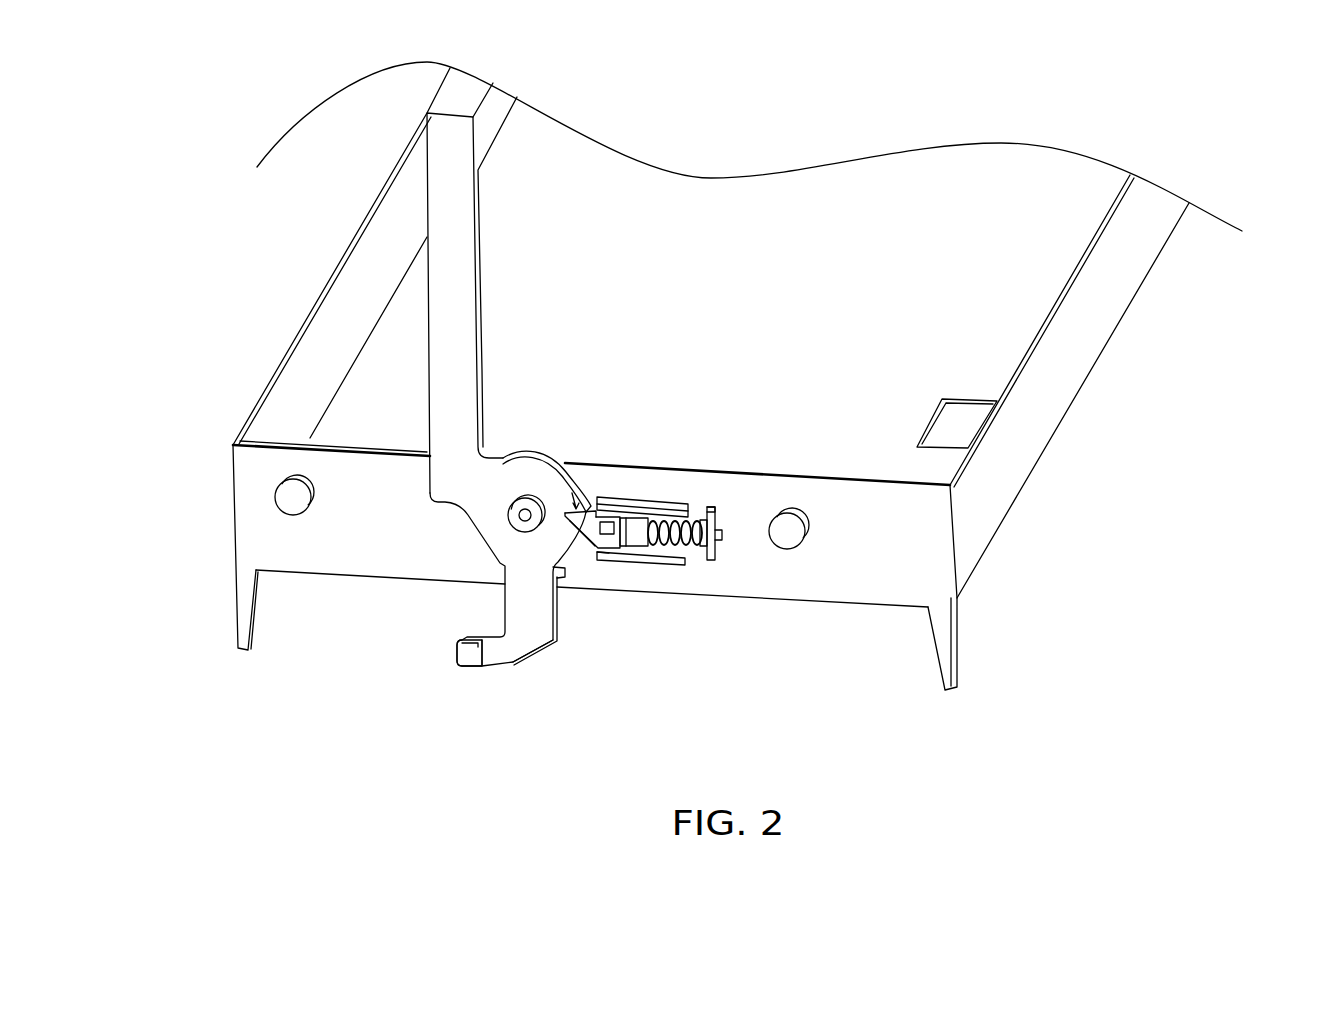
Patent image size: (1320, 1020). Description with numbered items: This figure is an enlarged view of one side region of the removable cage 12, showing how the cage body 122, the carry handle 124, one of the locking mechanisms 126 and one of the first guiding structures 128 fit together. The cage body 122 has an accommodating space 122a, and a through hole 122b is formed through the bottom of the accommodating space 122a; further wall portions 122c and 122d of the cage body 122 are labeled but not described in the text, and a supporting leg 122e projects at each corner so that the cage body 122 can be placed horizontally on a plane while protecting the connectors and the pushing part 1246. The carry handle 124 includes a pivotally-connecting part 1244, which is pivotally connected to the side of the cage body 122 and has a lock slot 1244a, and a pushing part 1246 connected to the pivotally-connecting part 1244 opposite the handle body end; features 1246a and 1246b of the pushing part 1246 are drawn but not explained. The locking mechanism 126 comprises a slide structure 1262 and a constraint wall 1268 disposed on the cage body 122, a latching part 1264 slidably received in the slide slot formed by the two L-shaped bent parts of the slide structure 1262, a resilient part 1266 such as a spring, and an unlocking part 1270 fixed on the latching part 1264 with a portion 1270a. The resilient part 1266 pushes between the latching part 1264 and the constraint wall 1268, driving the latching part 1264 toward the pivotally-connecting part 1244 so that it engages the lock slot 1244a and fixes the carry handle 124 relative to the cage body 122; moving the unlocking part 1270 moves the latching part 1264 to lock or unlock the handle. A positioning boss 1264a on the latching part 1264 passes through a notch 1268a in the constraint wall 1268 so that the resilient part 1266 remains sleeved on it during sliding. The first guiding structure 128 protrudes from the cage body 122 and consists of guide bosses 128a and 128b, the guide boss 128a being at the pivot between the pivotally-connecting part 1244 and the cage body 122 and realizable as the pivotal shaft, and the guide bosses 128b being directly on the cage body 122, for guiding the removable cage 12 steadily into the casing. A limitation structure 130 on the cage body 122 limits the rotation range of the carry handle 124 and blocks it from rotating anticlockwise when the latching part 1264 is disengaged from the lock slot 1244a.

The removable cage 12 is at (1139, 123).
The cage body 122 is at (903, 593).
The accommodating space 122a is at (999, 329).
The through hole 122b is at (962, 430).
The right side wall 122c is at (1127, 261).
The left side wall 122d is at (363, 222).
The supporting leg 122e is at (245, 605).
The carry handle 124 is at (472, 737).
The pivotally-connecting part 1244 is at (487, 530).
The lock slot 1244a is at (531, 495).
The pushing part 1246 is at (440, 420).
The hook end 1246a is at (472, 650).
The inclined surface 1246b is at (530, 650).
The locking mechanism 126 is at (590, 697).
The slide structure 1262 is at (668, 550).
The latching part 1264 is at (601, 549).
The positioning boss 1264a is at (722, 535).
The resilient part 1266 is at (697, 548).
The constraint wall 1268 is at (718, 560).
The notch 1268a is at (720, 521).
The unlocking part 1270 is at (637, 558).
The rail end 1270a is at (603, 553).
The first guiding structure 128 is at (843, 378).
The guide boss 128a is at (566, 461).
The guide boss 128b is at (297, 500).
The limitation structure 130 is at (557, 580).